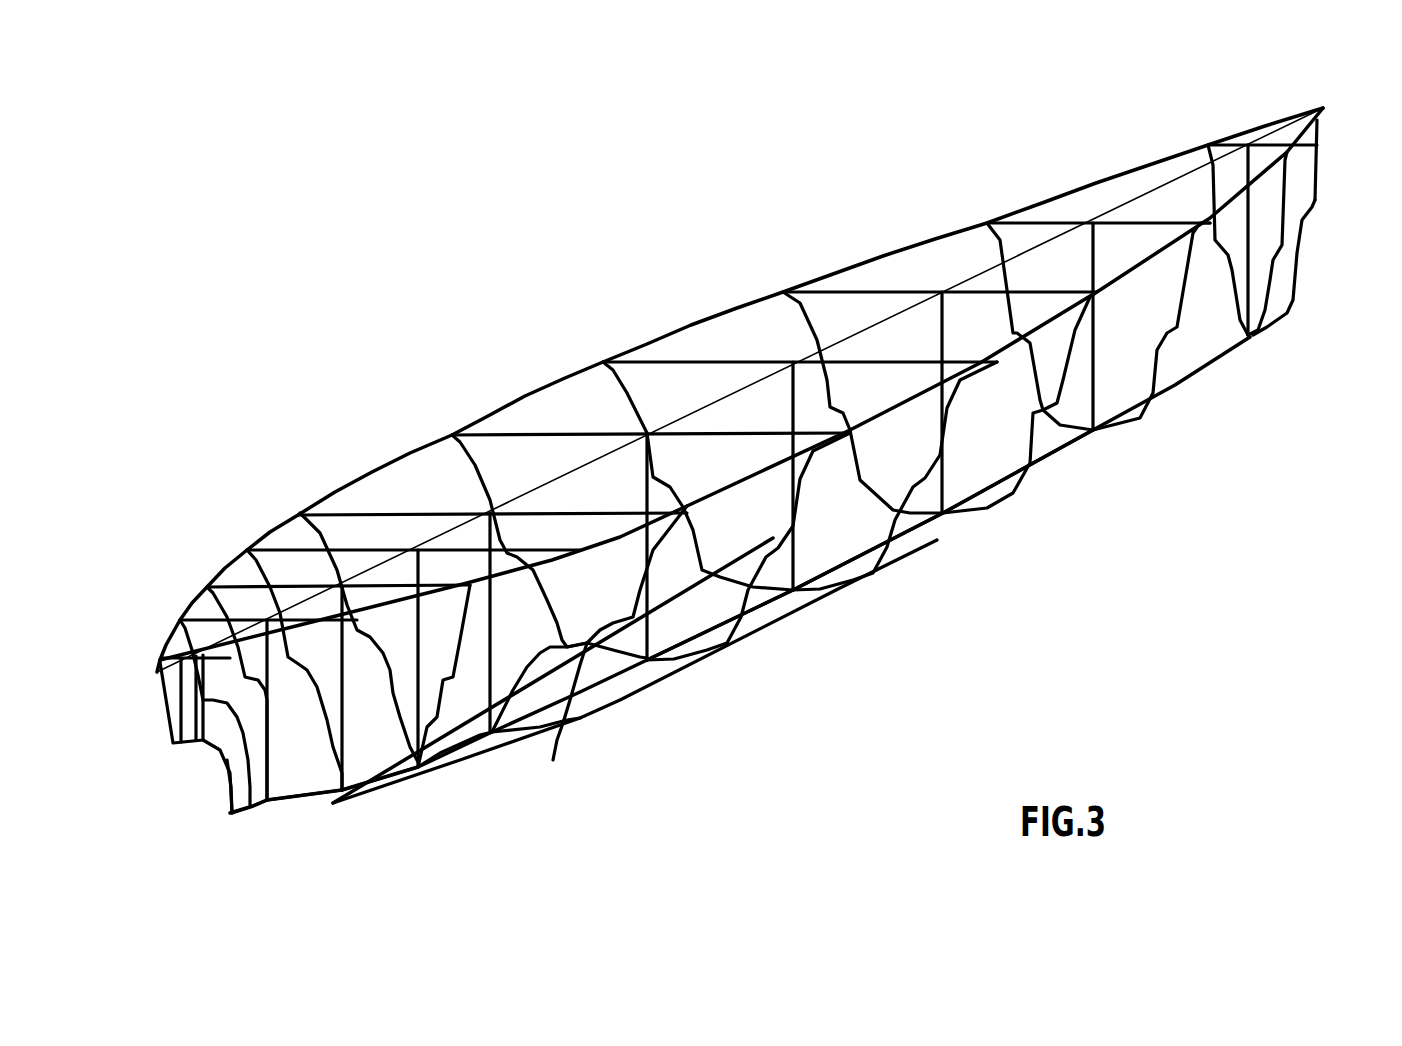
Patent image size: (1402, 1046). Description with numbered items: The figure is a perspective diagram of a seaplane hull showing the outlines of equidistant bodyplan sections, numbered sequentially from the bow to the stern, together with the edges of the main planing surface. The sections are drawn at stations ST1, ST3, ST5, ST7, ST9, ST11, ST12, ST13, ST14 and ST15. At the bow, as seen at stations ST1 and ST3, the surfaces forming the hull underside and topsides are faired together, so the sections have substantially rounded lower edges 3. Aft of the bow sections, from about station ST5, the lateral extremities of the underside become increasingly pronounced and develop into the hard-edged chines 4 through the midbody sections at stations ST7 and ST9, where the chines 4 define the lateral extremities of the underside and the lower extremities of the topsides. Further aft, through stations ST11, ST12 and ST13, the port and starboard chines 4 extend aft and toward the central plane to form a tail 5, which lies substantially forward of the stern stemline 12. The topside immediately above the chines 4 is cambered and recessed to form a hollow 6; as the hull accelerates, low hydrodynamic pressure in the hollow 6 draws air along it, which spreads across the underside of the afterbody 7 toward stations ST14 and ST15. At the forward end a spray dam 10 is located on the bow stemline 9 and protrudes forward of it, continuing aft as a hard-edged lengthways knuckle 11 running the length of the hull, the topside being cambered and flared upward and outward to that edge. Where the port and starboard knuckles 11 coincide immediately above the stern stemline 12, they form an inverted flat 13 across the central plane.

The rounded lower edges 3 is at (1247, 337).
The chines 4 is at (650, 692).
The tail 5 is at (332, 805).
The hollow 6 is at (558, 727).
The afterbody 7 is at (297, 797).
The bow stemline 9 is at (1297, 255).
The spray dam 10 is at (1317, 200).
The lengthways knuckle 11 is at (957, 513).
The stern stemline 12 is at (227, 788).
The inverted flat 13 is at (183, 745).
The station 1 ST1 is at (1230, 143).
The station 3 ST3 is at (1027, 221).
The station 5 ST5 is at (825, 291).
The station 7 ST7 is at (652, 361).
The station 9 ST9 is at (483, 433).
The station 11 ST11 is at (337, 513).
The station 12 ST12 is at (268, 550).
The station 13 ST13 is at (223, 587).
The station 14 ST14 is at (197, 740).
The station 15 ST15 is at (172, 745).